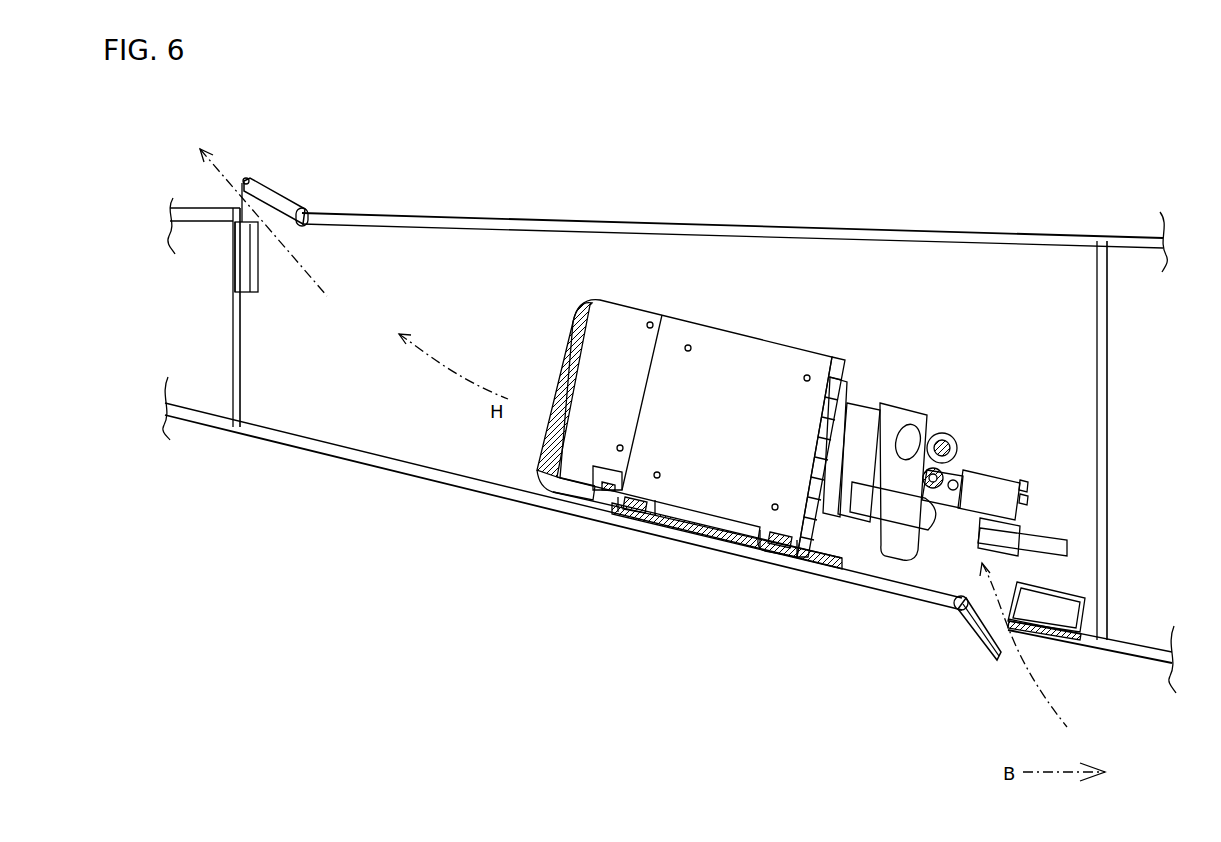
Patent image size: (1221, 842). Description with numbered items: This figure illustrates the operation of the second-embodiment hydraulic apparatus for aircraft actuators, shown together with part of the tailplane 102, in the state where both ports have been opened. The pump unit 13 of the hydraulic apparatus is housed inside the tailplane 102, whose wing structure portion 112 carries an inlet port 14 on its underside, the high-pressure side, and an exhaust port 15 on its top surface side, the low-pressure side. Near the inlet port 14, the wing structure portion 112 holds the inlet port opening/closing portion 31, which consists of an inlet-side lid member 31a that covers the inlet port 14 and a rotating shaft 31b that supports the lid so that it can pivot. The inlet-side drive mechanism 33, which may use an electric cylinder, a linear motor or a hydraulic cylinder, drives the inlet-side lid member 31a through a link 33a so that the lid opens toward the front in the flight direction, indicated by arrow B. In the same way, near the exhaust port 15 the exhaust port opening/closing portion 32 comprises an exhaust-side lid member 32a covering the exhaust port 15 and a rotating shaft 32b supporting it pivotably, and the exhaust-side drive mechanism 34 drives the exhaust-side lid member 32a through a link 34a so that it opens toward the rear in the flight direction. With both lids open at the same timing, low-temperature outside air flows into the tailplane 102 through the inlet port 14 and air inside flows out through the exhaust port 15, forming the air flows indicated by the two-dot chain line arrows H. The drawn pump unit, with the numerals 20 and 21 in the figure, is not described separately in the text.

The tailplane 102 is at (984, 221).
The wing structure portion 112 is at (905, 227).
The pump unit 13 is at (967, 390).
The inlet port 14 is at (1018, 645).
The exhaust port 15 is at (288, 229).
The pump unit 20 is at (903, 535).
The motor 21 is at (767, 342).
The inlet port opening/closing portion 31 is at (980, 650).
The inlet-side lid member 31a is at (968, 622).
The rotating shaft 31b is at (957, 607).
The exhaust port opening/closing portion 32 is at (280, 183).
The exhaust-side lid member 32a is at (247, 178).
The rotating shaft 32b is at (305, 212).
The inlet-side drive mechanism 33 is at (1047, 587).
The link 33a is at (1040, 640).
The exhaust-side drive mechanism 34 is at (243, 255).
The link 34a is at (240, 208).